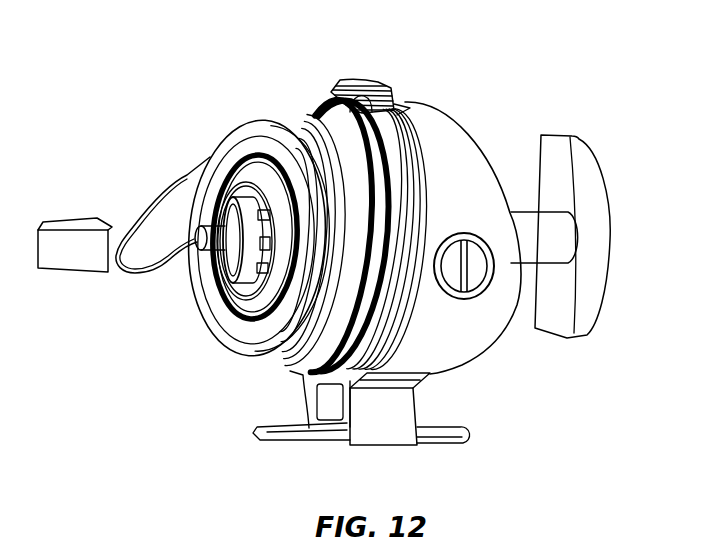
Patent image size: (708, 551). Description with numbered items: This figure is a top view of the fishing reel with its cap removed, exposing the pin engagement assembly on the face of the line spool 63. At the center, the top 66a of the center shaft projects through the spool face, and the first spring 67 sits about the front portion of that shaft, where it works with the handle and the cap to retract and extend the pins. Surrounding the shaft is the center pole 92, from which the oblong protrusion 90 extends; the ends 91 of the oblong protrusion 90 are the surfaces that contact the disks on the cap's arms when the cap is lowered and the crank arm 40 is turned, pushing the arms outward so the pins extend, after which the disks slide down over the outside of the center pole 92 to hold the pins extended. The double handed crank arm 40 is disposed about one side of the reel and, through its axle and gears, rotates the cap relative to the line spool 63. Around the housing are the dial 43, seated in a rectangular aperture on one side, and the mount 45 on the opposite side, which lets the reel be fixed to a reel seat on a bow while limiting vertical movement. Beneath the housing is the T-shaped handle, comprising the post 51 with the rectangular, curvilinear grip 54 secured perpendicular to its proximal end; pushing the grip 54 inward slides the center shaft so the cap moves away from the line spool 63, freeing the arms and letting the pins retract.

The double handed crank arm 40 is at (158, 188).
The dial 43 is at (384, 84).
The mount 45 is at (405, 411).
The post 51 is at (557, 224).
The grip 54 is at (597, 230).
The line spool 63 is at (305, 153).
The top of center shaft 66a is at (199, 241).
The first spring 67 is at (203, 224).
The oblong protrusion 90 is at (222, 266).
The ends of oblong protrusion 91 is at (237, 288).
The center pole 92 is at (232, 212).